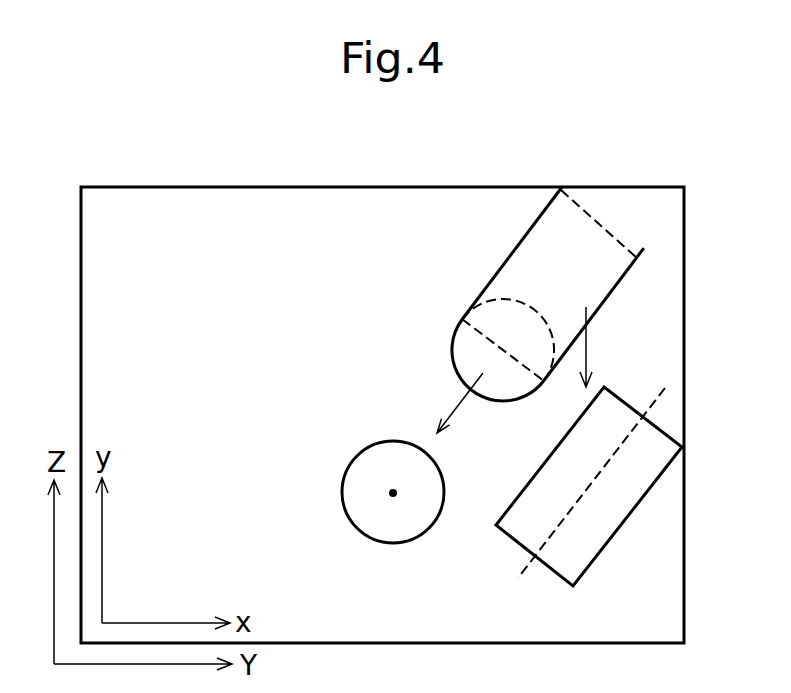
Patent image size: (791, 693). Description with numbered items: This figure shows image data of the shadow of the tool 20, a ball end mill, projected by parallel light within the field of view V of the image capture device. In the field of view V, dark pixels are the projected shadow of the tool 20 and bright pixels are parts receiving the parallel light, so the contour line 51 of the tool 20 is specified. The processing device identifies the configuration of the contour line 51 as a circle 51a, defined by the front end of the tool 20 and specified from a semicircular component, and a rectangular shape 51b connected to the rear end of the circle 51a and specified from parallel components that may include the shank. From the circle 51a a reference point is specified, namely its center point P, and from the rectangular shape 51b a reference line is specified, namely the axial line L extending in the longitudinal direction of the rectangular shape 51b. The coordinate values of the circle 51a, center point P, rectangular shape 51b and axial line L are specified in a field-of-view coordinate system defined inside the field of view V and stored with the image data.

The tool 20 is at (534, 285).
The contour line 51 is at (491, 283).
The circle 51a is at (362, 448).
The rectangular shape 51b is at (598, 555).
The field of view V is at (684, 310).
The axial line L is at (623, 442).
The center point P is at (393, 495).